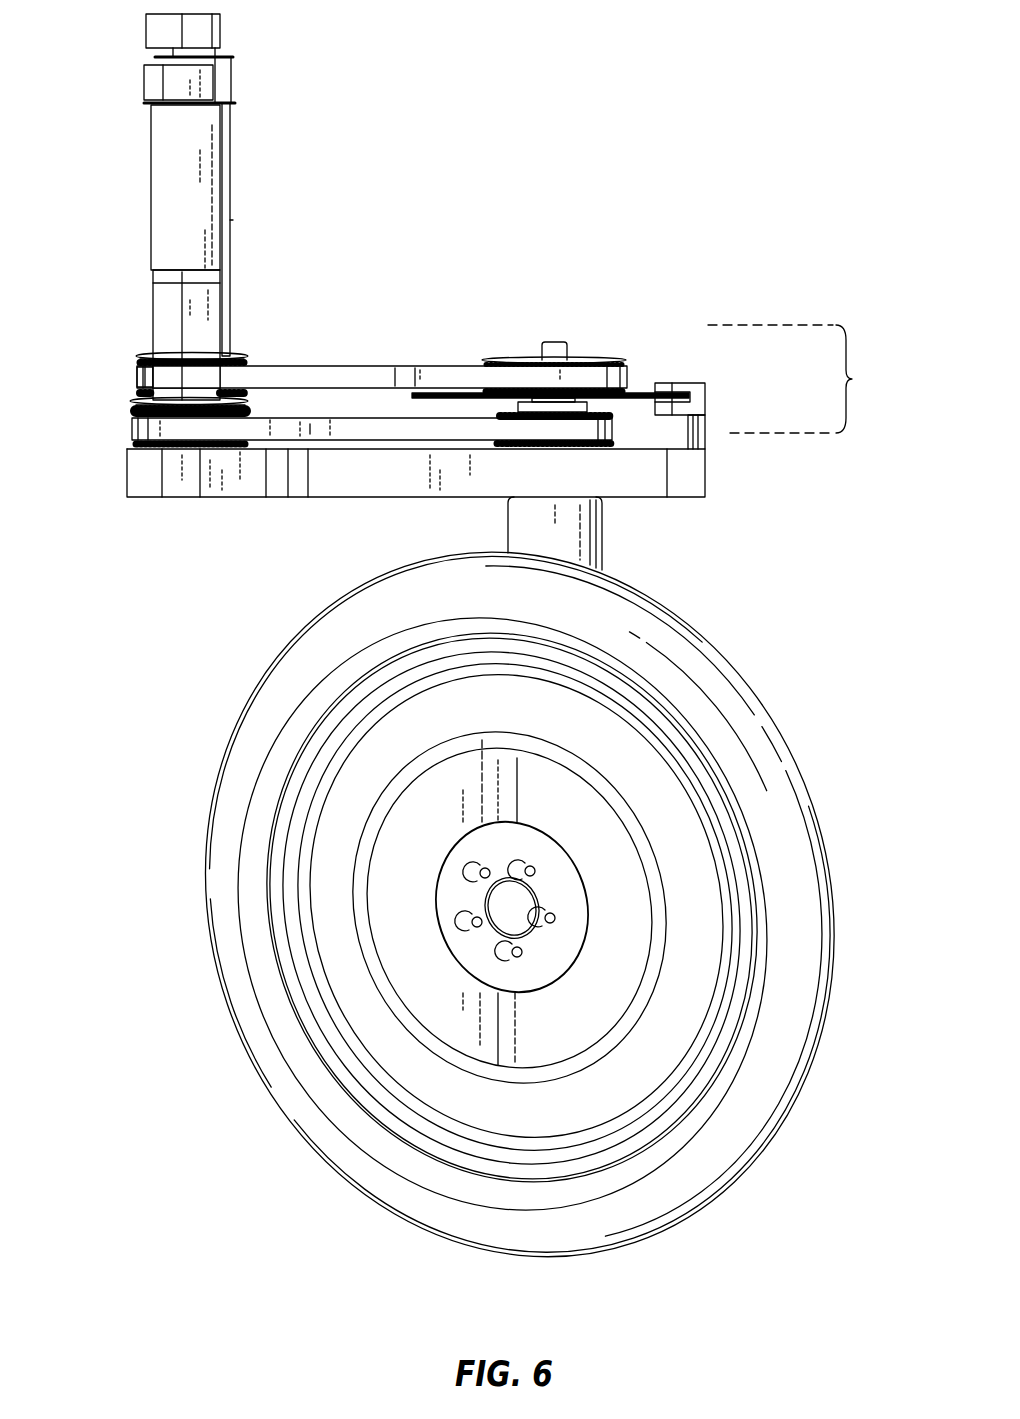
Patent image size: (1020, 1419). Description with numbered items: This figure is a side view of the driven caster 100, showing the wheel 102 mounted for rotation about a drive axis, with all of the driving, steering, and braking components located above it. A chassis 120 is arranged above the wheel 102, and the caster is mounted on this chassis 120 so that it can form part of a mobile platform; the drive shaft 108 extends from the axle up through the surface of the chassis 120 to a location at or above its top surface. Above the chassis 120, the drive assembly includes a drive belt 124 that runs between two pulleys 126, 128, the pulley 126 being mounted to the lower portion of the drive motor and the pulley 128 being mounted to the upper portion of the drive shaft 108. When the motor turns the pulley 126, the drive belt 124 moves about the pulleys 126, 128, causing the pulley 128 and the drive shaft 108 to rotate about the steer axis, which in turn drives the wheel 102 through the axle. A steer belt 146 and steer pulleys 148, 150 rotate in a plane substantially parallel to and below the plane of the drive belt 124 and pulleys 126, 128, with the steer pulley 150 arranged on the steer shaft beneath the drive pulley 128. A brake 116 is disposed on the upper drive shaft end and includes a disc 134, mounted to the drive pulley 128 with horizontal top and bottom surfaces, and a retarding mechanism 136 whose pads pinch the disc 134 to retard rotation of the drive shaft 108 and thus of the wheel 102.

The driven caster 100 is at (471, 292).
The wheel 102 is at (818, 848).
The drive shaft 108 is at (555, 342).
The brake 116 is at (801, 379).
The chassis 120 is at (207, 497).
The drive belt 124 is at (378, 366).
The pulley 126 is at (236, 356).
The pulley 128 is at (573, 321).
The disc 134 is at (640, 391).
The retarding mechanism 136 is at (700, 395).
The steer belt 146 is at (355, 430).
The steer pulley 148 is at (610, 444).
The steer pulley 150 is at (130, 403).